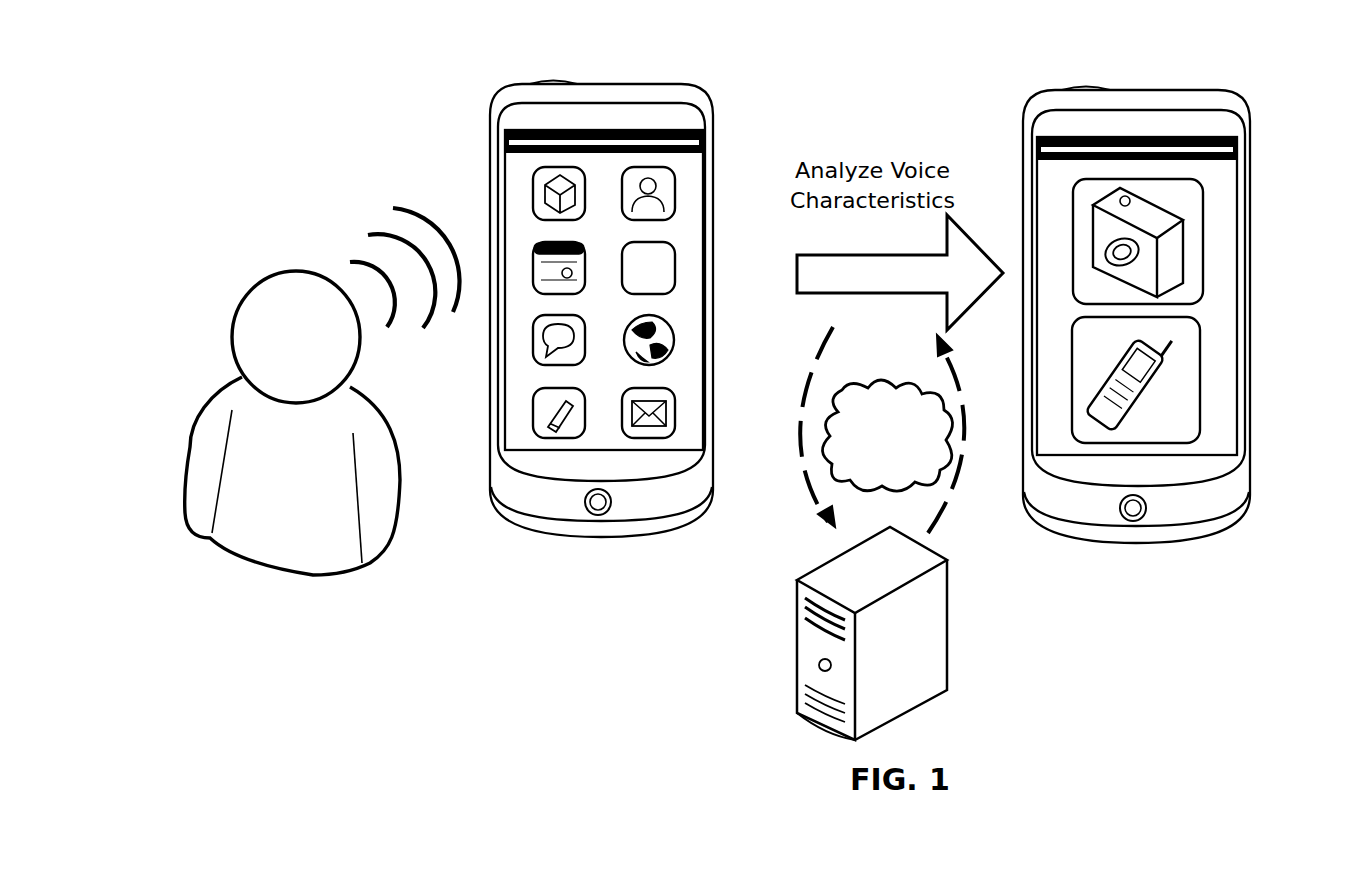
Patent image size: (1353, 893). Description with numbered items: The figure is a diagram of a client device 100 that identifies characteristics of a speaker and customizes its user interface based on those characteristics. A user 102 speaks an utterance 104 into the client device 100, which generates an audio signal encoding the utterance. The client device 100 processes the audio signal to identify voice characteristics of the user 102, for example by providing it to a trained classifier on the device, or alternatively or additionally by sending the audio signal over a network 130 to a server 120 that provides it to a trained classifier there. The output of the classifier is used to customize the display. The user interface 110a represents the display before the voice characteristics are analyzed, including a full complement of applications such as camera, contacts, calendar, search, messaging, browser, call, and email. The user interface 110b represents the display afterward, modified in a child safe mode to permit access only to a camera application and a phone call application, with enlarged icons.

The client device 100 is at (641, 284).
The user 102 is at (232, 347).
The utterance 104 is at (358, 214).
The user interface 110a is at (648, 293).
The user interface 110b is at (1183, 303).
The server 120 is at (947, 670).
The network 130 is at (901, 471).